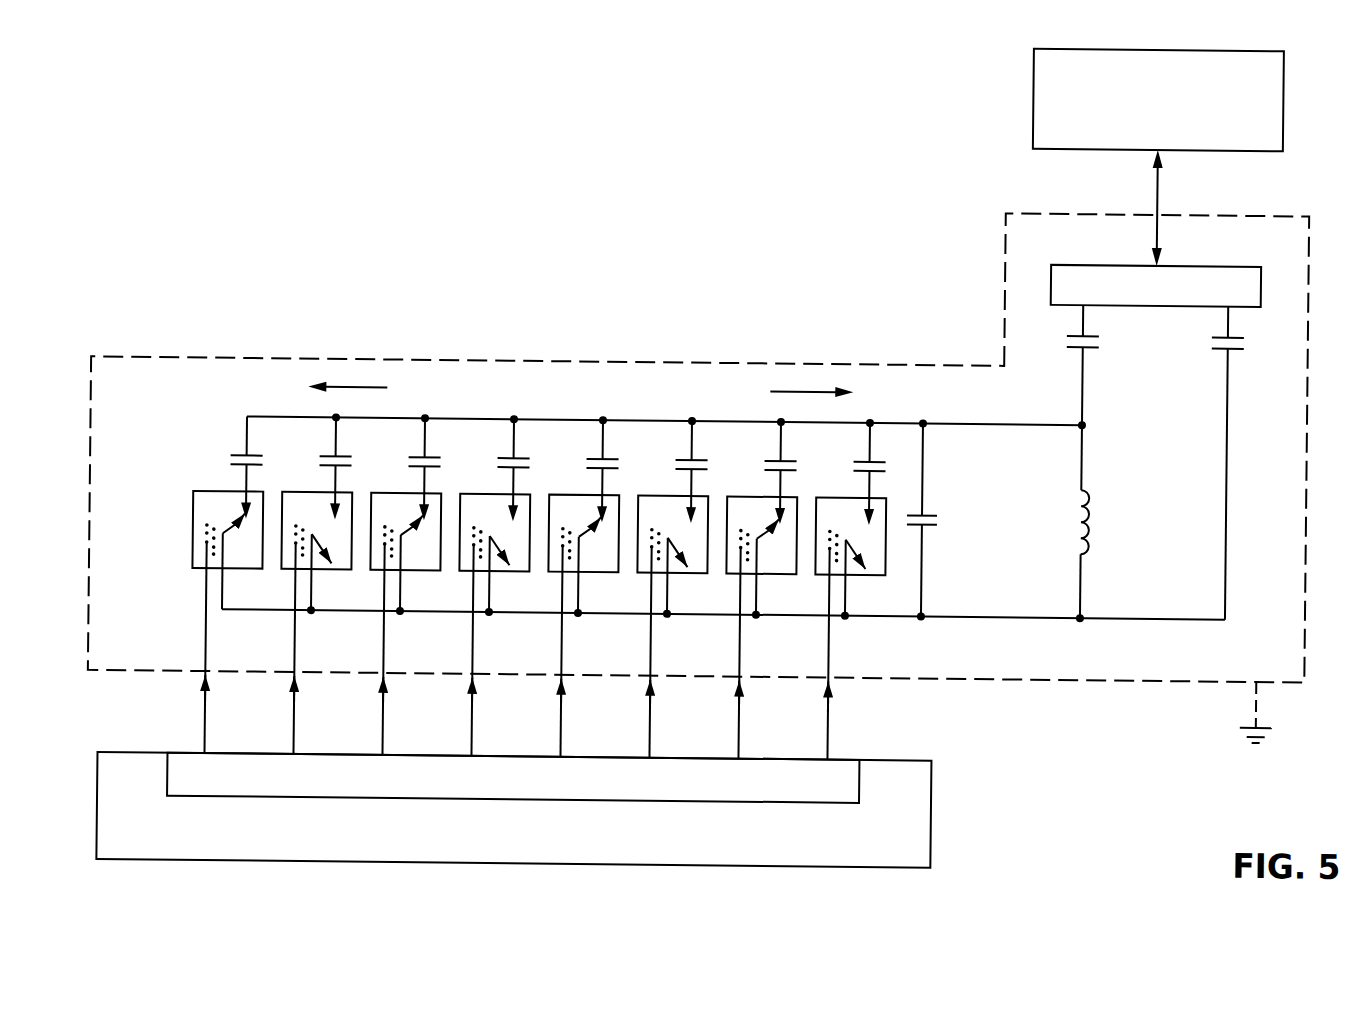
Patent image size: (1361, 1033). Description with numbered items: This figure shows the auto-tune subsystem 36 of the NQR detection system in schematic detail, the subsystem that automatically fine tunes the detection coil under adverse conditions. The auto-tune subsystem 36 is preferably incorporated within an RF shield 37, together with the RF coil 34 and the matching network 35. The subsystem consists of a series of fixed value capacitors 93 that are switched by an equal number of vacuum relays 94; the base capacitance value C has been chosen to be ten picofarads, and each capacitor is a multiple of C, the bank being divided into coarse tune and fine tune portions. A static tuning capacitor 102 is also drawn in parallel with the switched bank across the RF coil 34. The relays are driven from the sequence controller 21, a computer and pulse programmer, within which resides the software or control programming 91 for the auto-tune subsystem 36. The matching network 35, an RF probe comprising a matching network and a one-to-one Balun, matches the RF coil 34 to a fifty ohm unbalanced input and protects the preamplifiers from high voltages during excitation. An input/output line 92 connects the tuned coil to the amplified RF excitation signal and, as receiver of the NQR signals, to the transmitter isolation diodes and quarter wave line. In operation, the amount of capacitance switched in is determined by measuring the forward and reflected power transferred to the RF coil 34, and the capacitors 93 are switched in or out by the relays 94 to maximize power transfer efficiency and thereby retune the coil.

The sequence controller 21 is at (926, 832).
The RF coil 34 is at (1078, 536).
The matching network 35 is at (1038, 325).
The auto-tune subsystem 36 is at (425, 333).
The RF shield 37 is at (1050, 677).
The software or control programming 91 is at (847, 768).
The input/output line 92 is at (1153, 197).
The fixed value capacitors 93 is at (207, 468).
The vacuum relays 94 is at (176, 579).
The static tuning capacitor 102 is at (931, 524).